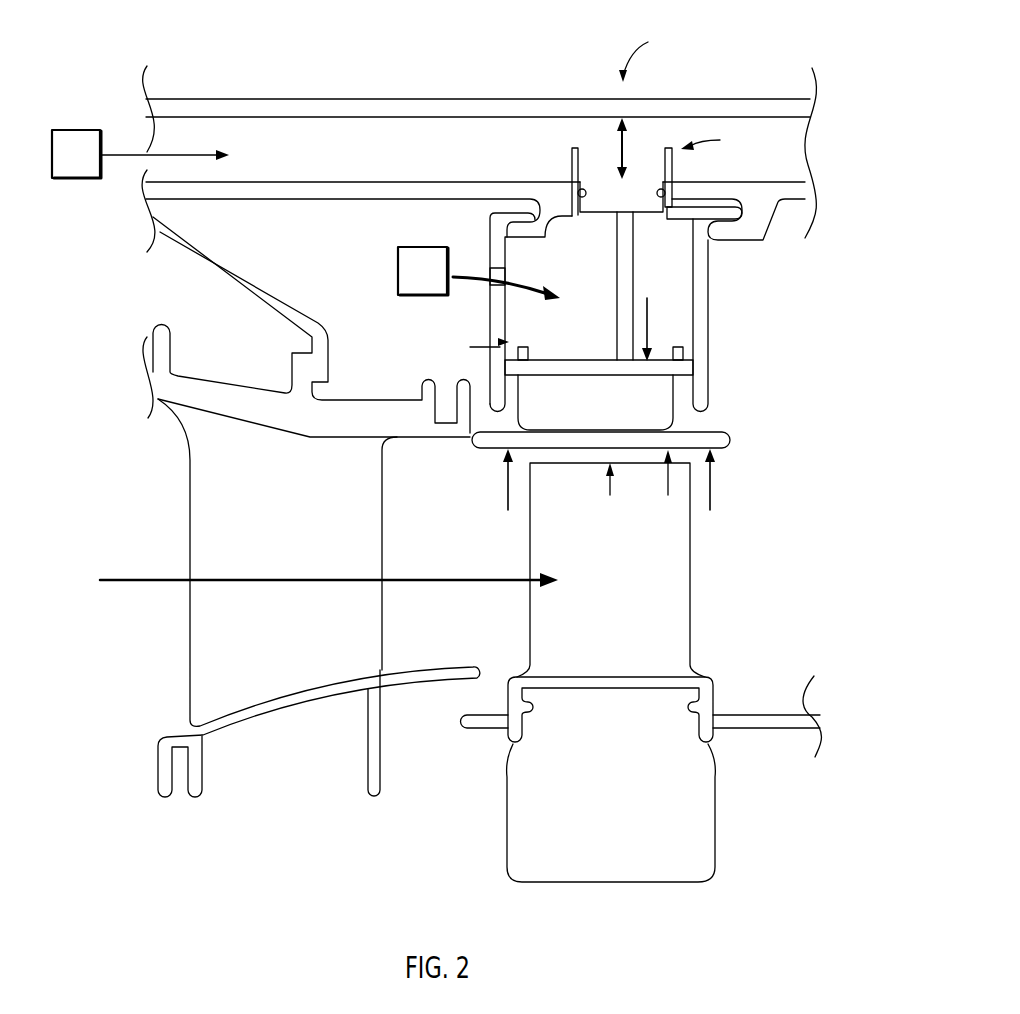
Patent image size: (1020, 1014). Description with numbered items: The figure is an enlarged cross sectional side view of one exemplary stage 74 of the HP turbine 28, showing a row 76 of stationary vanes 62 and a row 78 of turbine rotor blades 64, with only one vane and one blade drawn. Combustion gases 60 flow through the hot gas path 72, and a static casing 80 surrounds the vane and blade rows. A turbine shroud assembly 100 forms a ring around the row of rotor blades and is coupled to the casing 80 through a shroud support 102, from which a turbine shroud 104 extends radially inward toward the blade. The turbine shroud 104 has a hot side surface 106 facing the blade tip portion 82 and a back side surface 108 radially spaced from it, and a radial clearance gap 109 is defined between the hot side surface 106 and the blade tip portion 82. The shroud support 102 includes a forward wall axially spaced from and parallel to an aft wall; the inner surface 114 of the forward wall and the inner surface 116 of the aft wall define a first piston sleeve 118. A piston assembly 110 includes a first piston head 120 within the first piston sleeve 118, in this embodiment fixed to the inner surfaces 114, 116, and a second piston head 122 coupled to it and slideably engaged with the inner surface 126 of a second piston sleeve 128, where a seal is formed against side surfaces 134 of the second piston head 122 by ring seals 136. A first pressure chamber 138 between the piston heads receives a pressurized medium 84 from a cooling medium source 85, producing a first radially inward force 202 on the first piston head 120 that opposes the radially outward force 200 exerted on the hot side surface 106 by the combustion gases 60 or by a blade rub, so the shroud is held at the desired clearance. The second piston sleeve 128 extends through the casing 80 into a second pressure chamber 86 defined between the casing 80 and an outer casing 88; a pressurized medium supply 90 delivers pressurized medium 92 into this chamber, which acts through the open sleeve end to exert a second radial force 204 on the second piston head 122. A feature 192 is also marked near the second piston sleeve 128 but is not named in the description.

The HP turbine 28 is at (645, 54).
The combustion gases 60 is at (137, 578).
The stationary vanes 62 is at (307, 637).
The turbine rotor blades 64 is at (627, 592).
The hot gas path 72 is at (447, 557).
The stage 74 is at (405, 838).
The row of stationary vanes 76 is at (175, 640).
The row of turbine rotor blades 78 is at (512, 605).
The casing 80 is at (356, 196).
The blade tip portion 82 is at (610, 498).
The pressurized medium 84 is at (469, 275).
The cooling medium source 85 is at (432, 284).
The second pressure chamber 86 is at (422, 160).
The outer casing 88 is at (368, 105).
The pressurized medium supply 90 is at (86, 167).
The pressurized medium 92 is at (172, 156).
The turbine shroud assembly 100 is at (738, 309).
The shroud support 102 is at (737, 315).
The turbine shroud 104 is at (478, 447).
The hot side surface 106 is at (668, 489).
The back side surface 108 is at (578, 420).
The radial clearance gap 109 is at (580, 456).
The piston assembly 110 is at (605, 322).
The inner surface of forward wall 114 is at (506, 325).
The inner surface of aft wall 116 is at (692, 293).
The first piston sleeve 118 is at (469, 348).
The first piston head 120 is at (563, 374).
The second piston head 122 is at (605, 188).
The inner surface of second piston sleeve 126 is at (580, 160).
The second piston sleeve 128 is at (672, 163).
The side surfaces of second piston head 134 is at (585, 197).
The ring seals 136 is at (666, 193).
The first pressure chamber 138 is at (600, 280).
The seal contact 192 is at (715, 141).
The radially outward force 200 is at (507, 494).
The first radially inward force 202 is at (650, 302).
The second radial force 204 is at (633, 160).